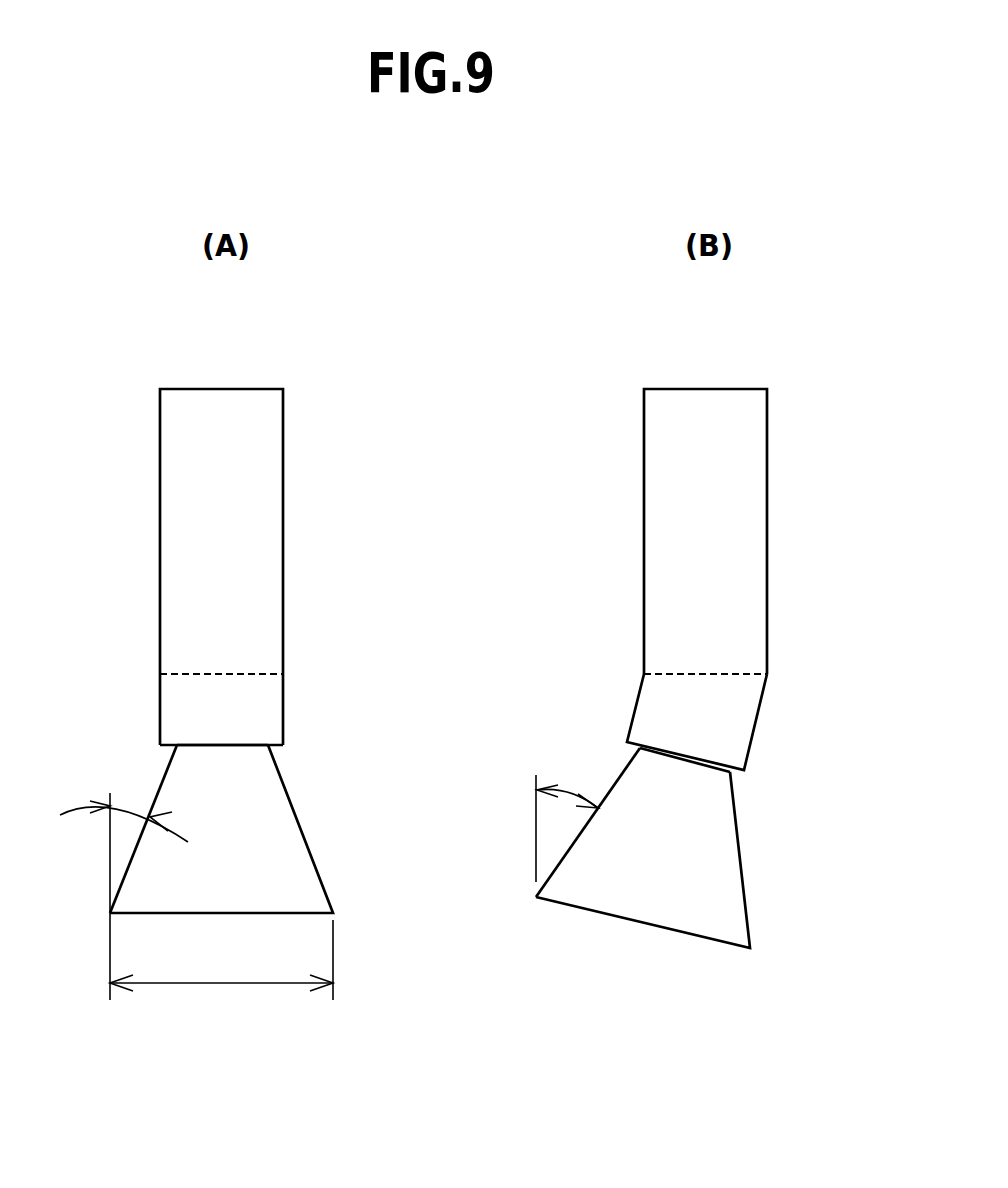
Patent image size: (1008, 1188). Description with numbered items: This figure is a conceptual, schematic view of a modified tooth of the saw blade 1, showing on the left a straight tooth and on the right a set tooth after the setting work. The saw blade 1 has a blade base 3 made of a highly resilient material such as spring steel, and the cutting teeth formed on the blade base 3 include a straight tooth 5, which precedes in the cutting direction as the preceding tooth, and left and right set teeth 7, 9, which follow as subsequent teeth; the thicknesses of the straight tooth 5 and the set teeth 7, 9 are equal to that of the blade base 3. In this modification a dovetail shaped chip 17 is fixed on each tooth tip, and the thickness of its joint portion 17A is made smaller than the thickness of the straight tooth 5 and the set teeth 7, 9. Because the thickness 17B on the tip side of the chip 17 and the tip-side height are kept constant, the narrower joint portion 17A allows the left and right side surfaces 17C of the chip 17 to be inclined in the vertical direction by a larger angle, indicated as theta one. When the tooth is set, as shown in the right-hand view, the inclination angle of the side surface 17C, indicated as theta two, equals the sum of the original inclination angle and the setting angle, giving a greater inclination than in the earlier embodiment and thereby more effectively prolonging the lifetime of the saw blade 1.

The saw blade 1 is at (352, 412).
The blade base 3 is at (260, 484).
The straight tooth 5 is at (190, 706).
The left set tooth 7 is at (753, 722).
The right set tooth 9 is at (738, 723).
The dovetail shaped chip 17 is at (283, 840).
The joint portion 17A is at (228, 747).
The thickness 17B is at (221, 975).
The side surface 17C is at (135, 855).